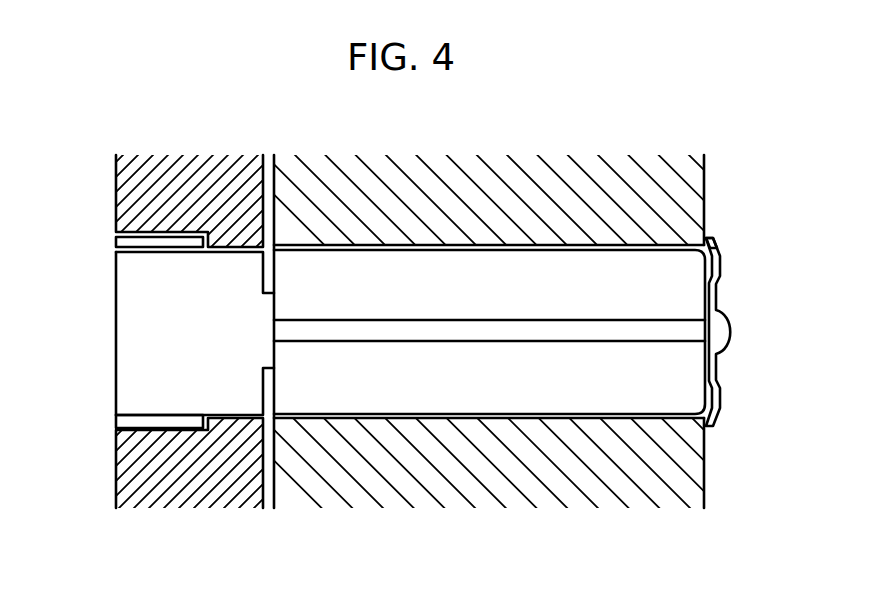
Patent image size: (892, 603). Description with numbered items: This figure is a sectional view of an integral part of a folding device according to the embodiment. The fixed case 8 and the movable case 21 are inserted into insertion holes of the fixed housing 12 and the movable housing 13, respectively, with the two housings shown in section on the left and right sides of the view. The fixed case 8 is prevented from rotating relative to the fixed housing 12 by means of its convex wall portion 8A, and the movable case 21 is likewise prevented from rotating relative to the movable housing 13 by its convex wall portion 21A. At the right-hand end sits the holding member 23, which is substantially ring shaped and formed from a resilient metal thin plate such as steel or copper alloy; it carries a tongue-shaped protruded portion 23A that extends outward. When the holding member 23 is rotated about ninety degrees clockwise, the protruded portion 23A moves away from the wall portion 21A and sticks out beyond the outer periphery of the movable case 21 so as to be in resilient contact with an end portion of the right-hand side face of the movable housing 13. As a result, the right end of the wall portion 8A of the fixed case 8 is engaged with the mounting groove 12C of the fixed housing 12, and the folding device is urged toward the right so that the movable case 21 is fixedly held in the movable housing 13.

The fixed case 8 is at (242, 392).
The convex wall portion 8A is at (188, 418).
The fixed housing 12 is at (210, 162).
The mounting groove 12C is at (148, 432).
The movable housing 13 is at (486, 162).
The movable case 21 is at (431, 398).
The convex wall portion 21A is at (501, 330).
The holding member 23 is at (720, 390).
The protruded portion 23A is at (717, 243).